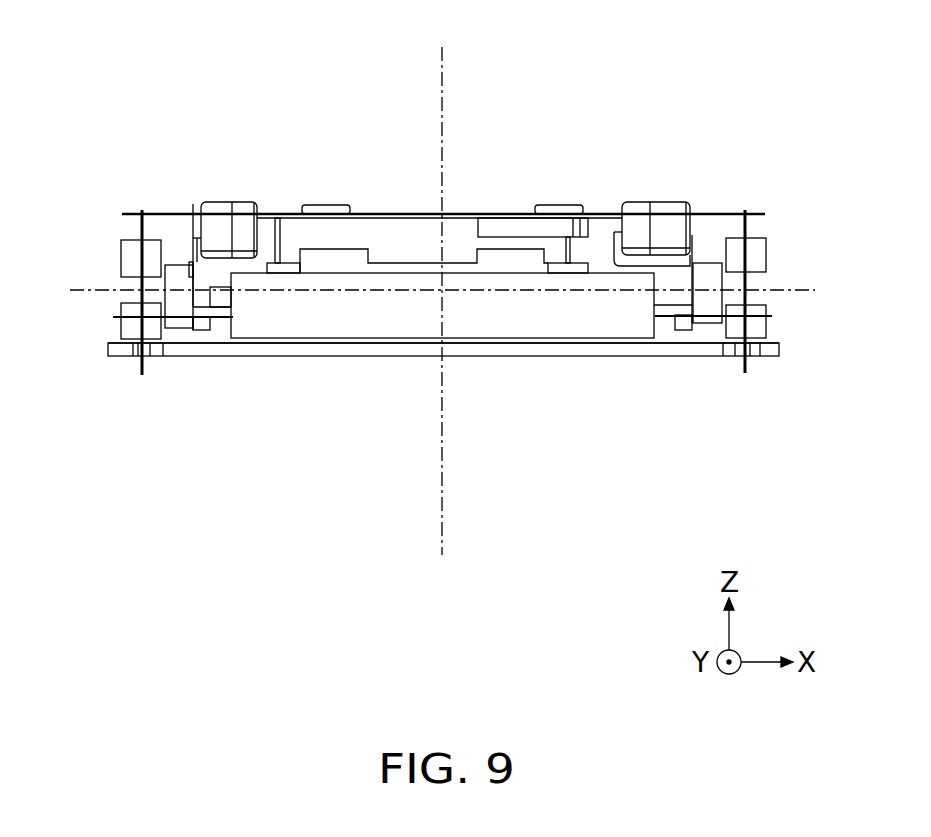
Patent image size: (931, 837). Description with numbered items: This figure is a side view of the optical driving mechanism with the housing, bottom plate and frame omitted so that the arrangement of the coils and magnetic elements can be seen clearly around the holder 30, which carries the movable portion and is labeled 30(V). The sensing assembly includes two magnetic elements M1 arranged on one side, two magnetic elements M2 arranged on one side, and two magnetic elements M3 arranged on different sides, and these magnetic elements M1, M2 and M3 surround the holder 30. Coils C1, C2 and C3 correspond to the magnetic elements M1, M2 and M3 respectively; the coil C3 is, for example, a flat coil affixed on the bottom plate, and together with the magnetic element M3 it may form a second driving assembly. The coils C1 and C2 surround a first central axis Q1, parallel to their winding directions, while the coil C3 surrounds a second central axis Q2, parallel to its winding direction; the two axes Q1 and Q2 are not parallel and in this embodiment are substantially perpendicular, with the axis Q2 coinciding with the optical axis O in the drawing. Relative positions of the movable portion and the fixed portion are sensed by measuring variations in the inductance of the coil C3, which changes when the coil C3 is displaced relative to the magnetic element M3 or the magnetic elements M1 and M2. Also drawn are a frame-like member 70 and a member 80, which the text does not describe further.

The fixed body frame 70 is at (168, 213).
The holder 30 is at (395, 235).
The support mechanism 80 is at (188, 323).
The magnetic element M1 is at (762, 255).
The magnetic element M2 is at (127, 255).
The magnetic element M3 is at (323, 323).
The coil C1 is at (707, 305).
The coil C2 is at (178, 307).
The coil C3 is at (582, 347).
The first central axis Q1 is at (465, 288).
The second central axis Q2 is at (441, 283).
The optical axis O is at (441, 283).